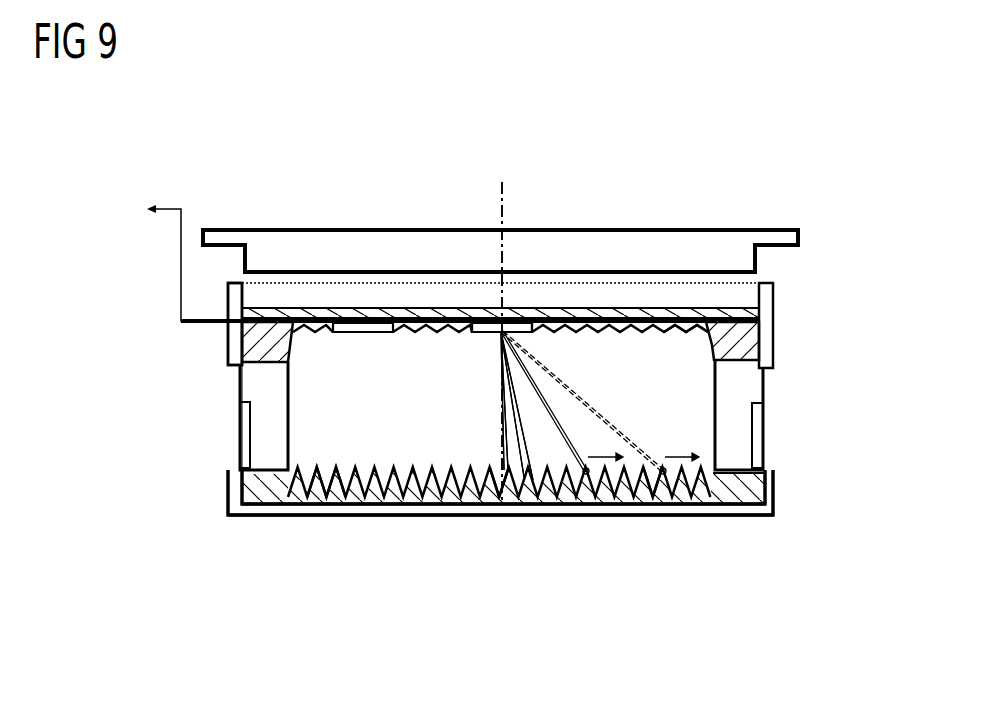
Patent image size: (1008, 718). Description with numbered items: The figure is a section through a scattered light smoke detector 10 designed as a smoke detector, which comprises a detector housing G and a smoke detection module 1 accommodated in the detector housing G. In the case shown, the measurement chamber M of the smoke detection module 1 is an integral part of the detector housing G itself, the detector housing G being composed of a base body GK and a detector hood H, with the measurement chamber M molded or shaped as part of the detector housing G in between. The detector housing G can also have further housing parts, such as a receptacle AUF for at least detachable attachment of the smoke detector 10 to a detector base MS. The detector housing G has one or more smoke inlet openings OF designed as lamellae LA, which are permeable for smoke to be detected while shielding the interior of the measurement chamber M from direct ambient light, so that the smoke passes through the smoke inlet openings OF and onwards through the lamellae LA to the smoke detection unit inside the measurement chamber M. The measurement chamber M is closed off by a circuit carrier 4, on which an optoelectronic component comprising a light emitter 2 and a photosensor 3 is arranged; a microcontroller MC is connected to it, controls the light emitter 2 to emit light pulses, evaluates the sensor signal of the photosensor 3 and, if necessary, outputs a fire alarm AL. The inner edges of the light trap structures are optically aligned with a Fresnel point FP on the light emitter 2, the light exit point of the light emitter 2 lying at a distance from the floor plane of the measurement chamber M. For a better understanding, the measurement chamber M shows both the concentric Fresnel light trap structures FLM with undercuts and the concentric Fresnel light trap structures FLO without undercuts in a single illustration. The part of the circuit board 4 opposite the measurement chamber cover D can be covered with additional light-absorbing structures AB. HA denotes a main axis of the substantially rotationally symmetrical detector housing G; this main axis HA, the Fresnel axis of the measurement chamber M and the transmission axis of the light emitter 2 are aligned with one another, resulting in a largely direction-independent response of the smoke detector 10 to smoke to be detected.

The scattered light smoke detector 10 is at (780, 172).
The main axis HA is at (503, 202).
The detector base MS is at (800, 237).
The receptacle AUF is at (768, 292).
The detector housing G is at (235, 324).
The base body GK is at (772, 358).
The smoke inlet openings OF is at (765, 412).
The lamellae LA is at (248, 378).
The fire alarm AL is at (435, 256).
The microcontroller MC is at (370, 323).
The light emitter 2 is at (517, 325).
The photosensor 3 is at (502, 327).
The circuit carrier 4 is at (650, 310).
The Fresnel point FP is at (498, 332).
The beam point BP is at (517, 406).
The light-absorbing structures AB is at (675, 330).
The smoke detection module 1 is at (773, 487).
The measurement chamber M is at (500, 492).
The concentric Fresnel light trap structures with undercuts FLM is at (443, 500).
The measurement chamber cover D is at (332, 500).
The flank FL is at (500, 500).
The concentric Fresnel light trap structures without undercuts FLO is at (650, 500).
The detector hood H is at (578, 510).